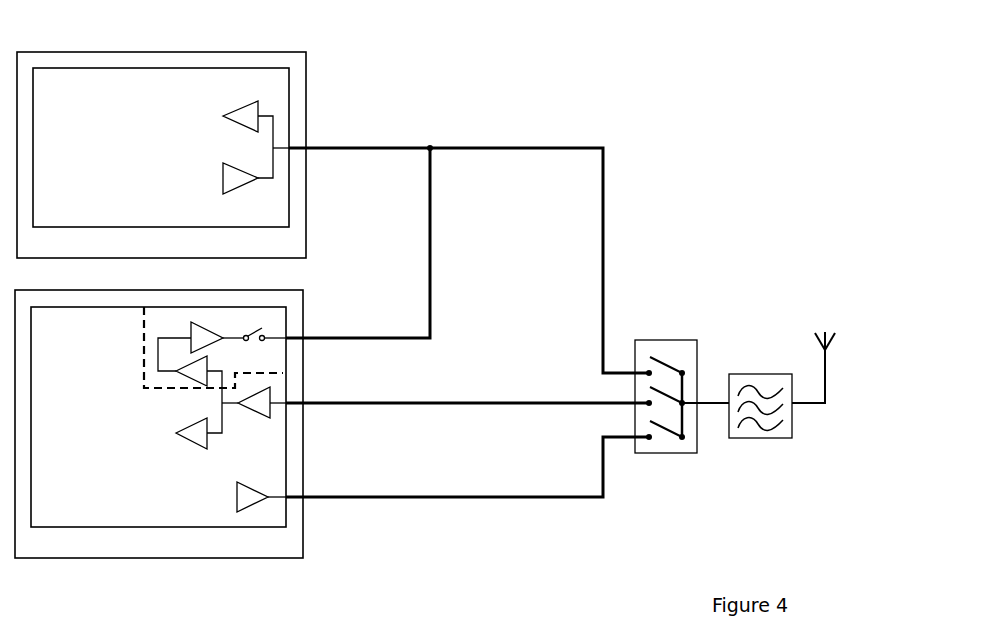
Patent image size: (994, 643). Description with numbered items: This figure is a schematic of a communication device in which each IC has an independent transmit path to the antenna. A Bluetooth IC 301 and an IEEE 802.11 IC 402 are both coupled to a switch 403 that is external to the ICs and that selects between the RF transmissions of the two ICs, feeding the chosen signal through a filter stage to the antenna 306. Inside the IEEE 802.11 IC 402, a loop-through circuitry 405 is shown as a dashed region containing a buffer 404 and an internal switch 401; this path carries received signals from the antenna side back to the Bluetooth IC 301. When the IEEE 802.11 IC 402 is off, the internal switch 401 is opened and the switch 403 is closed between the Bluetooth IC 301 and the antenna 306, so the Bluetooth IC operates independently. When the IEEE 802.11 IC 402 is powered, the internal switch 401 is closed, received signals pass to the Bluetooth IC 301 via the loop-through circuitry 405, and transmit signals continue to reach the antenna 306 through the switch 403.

The Bluetooth IC 301 is at (307, 93).
The antenna 306 is at (818, 325).
The internal switch 401 is at (263, 323).
The IEEE 802.11 IC 402 is at (187, 438).
The switch 403 is at (663, 340).
The buffer 404 is at (197, 325).
The loop-through circuitry 405 is at (147, 340).